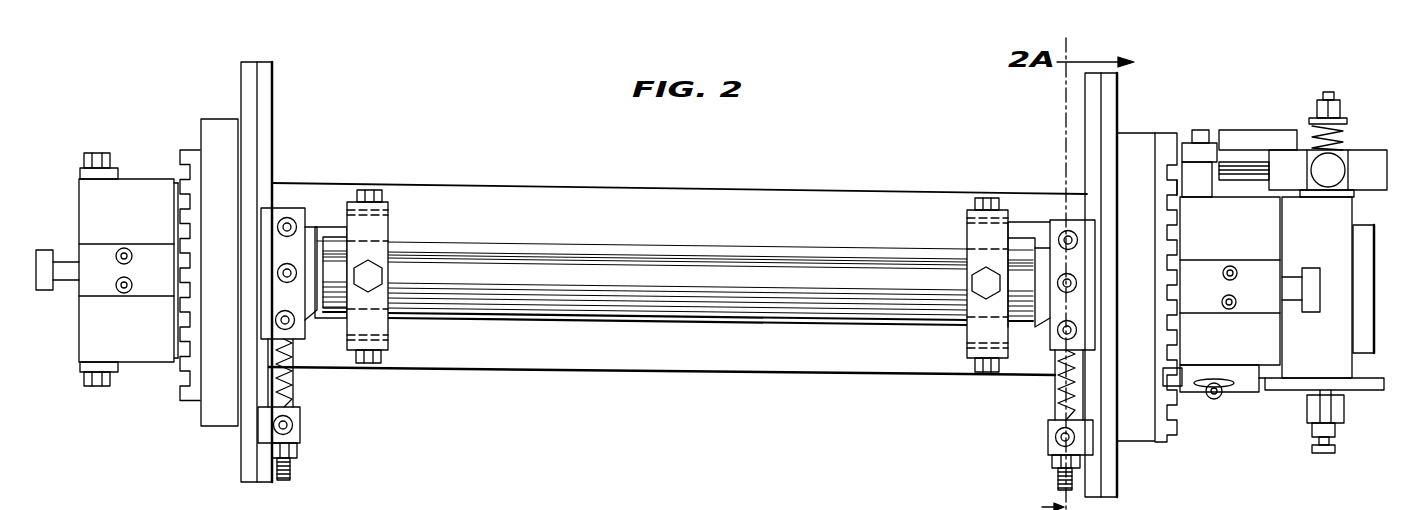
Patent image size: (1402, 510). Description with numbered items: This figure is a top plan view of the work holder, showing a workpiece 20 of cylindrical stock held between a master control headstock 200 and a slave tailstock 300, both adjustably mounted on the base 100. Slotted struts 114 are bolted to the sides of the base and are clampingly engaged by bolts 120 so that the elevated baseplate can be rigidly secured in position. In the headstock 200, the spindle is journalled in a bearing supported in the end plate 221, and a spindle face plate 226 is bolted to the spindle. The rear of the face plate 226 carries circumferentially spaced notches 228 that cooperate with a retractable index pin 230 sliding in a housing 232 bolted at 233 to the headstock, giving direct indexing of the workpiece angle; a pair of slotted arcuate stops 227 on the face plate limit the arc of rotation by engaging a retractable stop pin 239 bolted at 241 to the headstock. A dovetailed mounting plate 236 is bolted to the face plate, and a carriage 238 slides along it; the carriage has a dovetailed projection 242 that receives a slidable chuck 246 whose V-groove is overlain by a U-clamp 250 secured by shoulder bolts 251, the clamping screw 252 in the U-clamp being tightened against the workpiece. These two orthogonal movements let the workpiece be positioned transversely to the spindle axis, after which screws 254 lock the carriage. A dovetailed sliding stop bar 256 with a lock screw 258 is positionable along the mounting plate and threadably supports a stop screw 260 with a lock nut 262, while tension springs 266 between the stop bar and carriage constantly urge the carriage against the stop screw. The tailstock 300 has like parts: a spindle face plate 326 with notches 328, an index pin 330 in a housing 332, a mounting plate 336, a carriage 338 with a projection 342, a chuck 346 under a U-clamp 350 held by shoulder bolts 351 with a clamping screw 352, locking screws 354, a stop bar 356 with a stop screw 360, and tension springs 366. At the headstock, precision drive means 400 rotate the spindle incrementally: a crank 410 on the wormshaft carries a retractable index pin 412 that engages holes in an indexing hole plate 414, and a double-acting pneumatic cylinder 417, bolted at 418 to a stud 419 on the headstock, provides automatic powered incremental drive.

The workpiece 20 is at (712, 245).
The base 100 is at (546, 181).
The slotted struts 114 is at (79, 176).
The bolts 120 is at (90, 153).
The master control headstock 200 is at (1250, 246).
The end plate 221 is at (1373, 240).
The spindle face plate 226 is at (1133, 134).
The slotted arcuate stops 227 is at (1172, 133).
The notches 228 is at (1170, 186).
The retractable index pin 230 is at (1306, 268).
The housing 232 is at (1250, 308).
The bolts 233 is at (1223, 274).
The dovetailed mounting plate 236 is at (1085, 106).
The carriage 238 is at (1060, 221).
The retractable stop pin 239 is at (1180, 390).
The bolt 241 is at (1224, 396).
The dovetailed projection 242 is at (1040, 322).
The slidable chuck 246 is at (1020, 220).
The U-clamp 250 is at (970, 235).
The shoulder bolts 251 is at (970, 366).
The clamping screw 252 is at (985, 300).
The screws 254 is at (1074, 322).
The dovetailed sliding stop bar 256 is at (1048, 433).
The lock screw 258 is at (1075, 440).
The stop screw 260 is at (1058, 478).
The lock nut 262 is at (1052, 460).
The tension springs 266 is at (1057, 395).
The slave tailstock 300 is at (146, 166).
The spindle face plate 326 is at (212, 119).
The notches 328 is at (176, 374).
The retractable index pin 330 is at (51, 250).
The housing 332 is at (142, 246).
The dovetailed mounting plate 336 is at (272, 88).
The carriage 338 is at (286, 207).
The dovetailed projection 342 is at (308, 320).
The slidable chuck 346 is at (325, 228).
The U-clamp 350 is at (372, 201).
The shoulder bolts 351 is at (370, 363).
The clamping screw 352 is at (374, 258).
The screws 354 is at (277, 312).
The dovetailed sliding stop bar 356 is at (300, 433).
The stop screw 360 is at (291, 472).
The tension springs 366 is at (292, 395).
The precision drive means 400 is at (1366, 136).
The crank 410 is at (1342, 424).
The index pin 412 is at (1313, 449).
The indexing hole plate 414 is at (1352, 391).
The double-acting pneumatic cylinder 417 is at (1247, 130).
The bolt 418 is at (1203, 130).
The stud 419 is at (1200, 168).